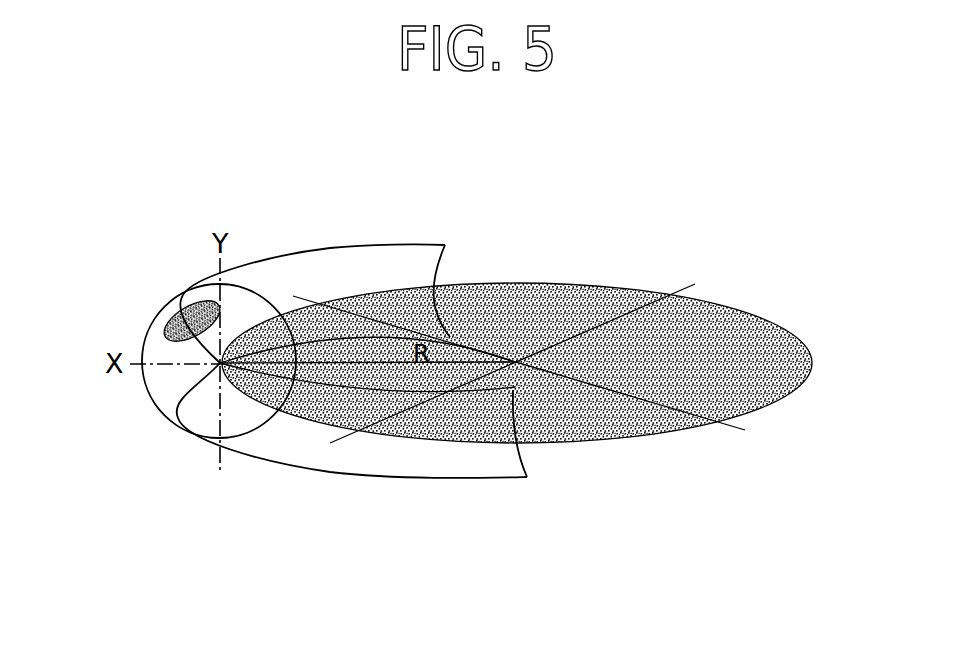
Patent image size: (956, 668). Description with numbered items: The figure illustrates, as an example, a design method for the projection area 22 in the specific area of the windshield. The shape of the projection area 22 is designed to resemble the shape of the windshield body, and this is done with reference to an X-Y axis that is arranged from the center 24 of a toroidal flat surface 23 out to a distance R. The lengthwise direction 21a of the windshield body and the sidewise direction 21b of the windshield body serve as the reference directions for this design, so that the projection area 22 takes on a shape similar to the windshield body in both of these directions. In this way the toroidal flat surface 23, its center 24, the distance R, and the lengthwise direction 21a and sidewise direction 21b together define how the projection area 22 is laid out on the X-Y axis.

The lengthwise direction of the windshield body 21a is at (159, 313).
The sidewise direction of the windshield body 21b is at (338, 247).
The light emitting region 22 is at (195, 302).
The toroidal flat surface 23 is at (600, 441).
The center of the toroidal flat surface 24 is at (515, 362).